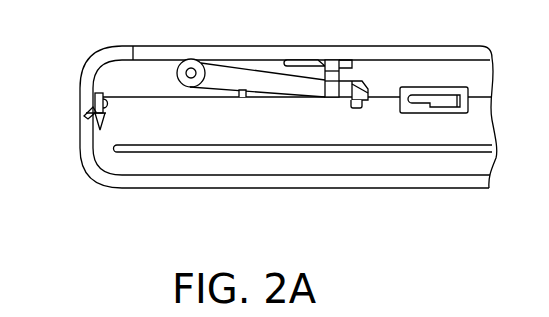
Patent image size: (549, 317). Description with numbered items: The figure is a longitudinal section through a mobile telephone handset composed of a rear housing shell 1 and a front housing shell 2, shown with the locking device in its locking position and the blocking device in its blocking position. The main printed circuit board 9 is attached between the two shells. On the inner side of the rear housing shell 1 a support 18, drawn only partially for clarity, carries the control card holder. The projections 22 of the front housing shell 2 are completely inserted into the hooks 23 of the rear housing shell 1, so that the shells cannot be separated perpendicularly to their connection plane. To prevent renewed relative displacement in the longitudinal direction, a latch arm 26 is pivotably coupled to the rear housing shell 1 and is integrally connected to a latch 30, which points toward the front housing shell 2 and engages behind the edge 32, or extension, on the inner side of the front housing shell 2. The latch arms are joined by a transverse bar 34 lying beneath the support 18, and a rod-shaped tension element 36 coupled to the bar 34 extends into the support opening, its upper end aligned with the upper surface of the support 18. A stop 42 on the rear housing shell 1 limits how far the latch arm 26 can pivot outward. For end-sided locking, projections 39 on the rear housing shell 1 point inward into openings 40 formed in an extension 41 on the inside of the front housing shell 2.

The rear housing shell 1 is at (88, 68).
The front housing shell 2 is at (88, 158).
The main printed circuit board 9 is at (159, 153).
The support 18 is at (300, 62).
The projections 22 is at (413, 106).
The hooks 23 is at (432, 87).
The latch arm 26 is at (225, 77).
The latch 30 is at (365, 92).
The edge 32 is at (352, 108).
The bar 34 is at (331, 90).
The tension element 36 is at (334, 60).
The projections 39 is at (96, 100).
The openings 40 is at (92, 112).
The extension 41 is at (105, 116).
The stops 42 is at (241, 98).